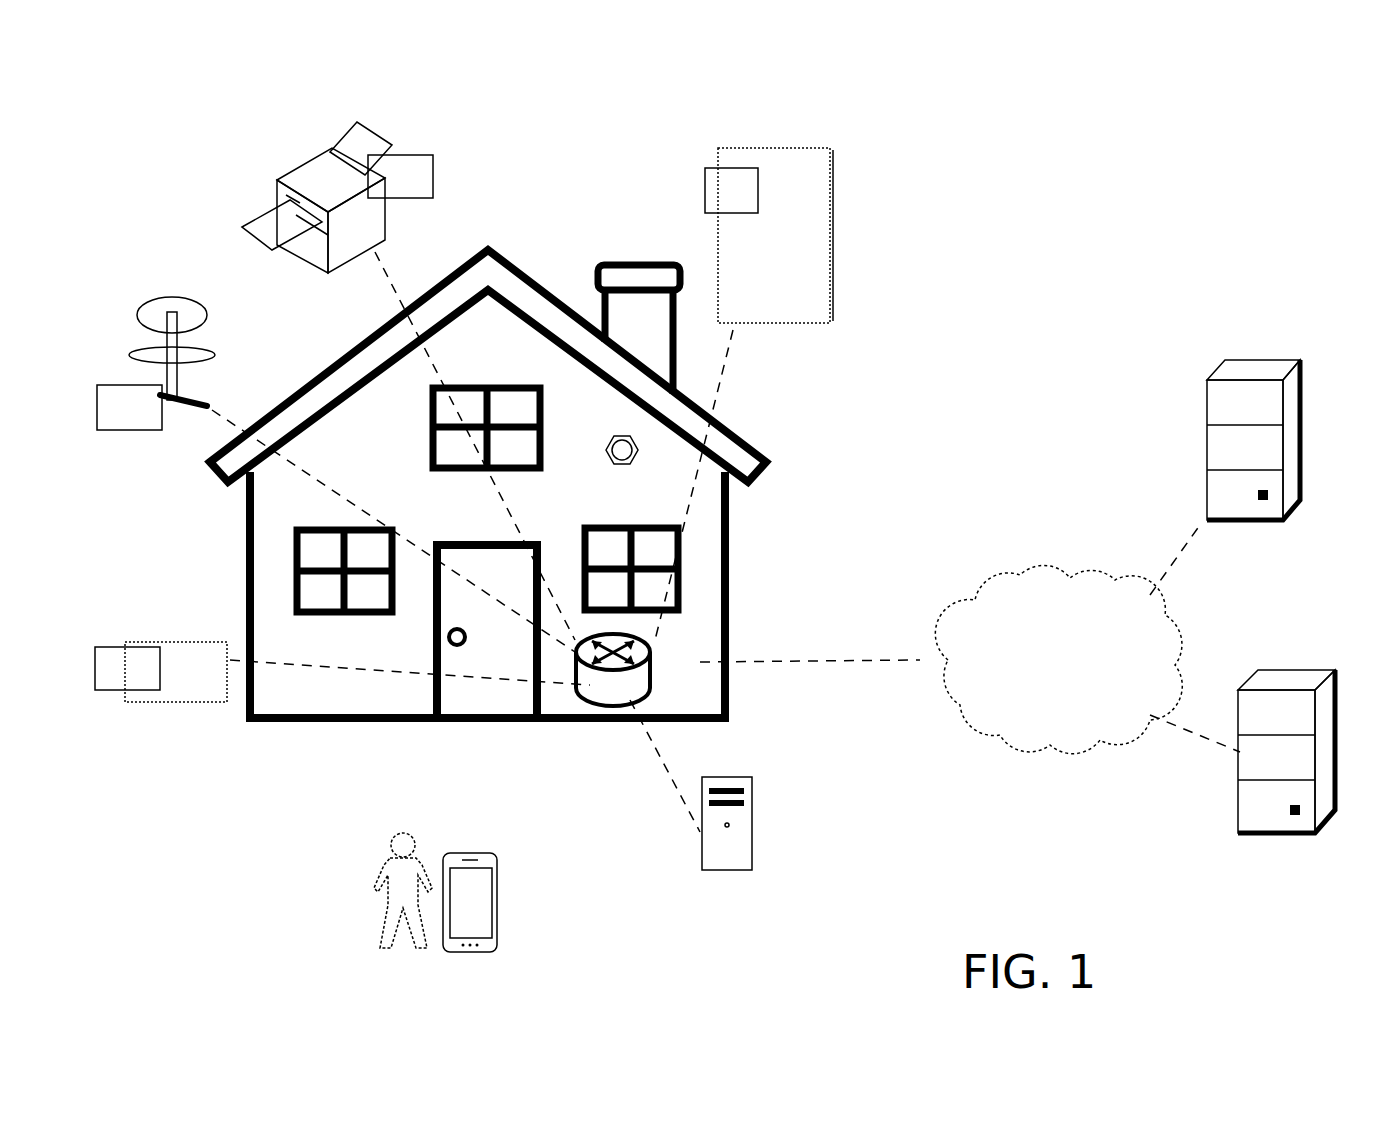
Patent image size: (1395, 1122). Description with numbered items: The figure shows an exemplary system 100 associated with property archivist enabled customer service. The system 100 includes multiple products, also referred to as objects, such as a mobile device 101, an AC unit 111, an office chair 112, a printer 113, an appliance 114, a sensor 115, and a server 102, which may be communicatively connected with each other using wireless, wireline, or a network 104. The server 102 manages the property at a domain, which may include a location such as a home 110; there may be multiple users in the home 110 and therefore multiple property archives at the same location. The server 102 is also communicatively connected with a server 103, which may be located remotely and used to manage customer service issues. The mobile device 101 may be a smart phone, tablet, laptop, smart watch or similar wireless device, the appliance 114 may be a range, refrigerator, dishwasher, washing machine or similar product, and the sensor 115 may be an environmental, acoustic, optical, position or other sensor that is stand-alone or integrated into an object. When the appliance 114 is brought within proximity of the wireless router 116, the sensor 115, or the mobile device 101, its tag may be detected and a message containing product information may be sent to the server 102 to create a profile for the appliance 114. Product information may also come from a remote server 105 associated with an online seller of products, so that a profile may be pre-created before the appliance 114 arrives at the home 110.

The system 100 is at (130, 108).
The mobile device 101 is at (470, 852).
The server 102 is at (735, 777).
The server 103 is at (1288, 668).
The network 104 is at (1041, 672).
The server 105 is at (1300, 360).
The home 110 is at (523, 268).
The AC unit 111 is at (173, 640).
The office chair 112 is at (172, 297).
The printer 113 is at (312, 160).
The appliance 114 is at (836, 198).
The sensor 115 is at (640, 447).
The wireless router 116 is at (652, 665).